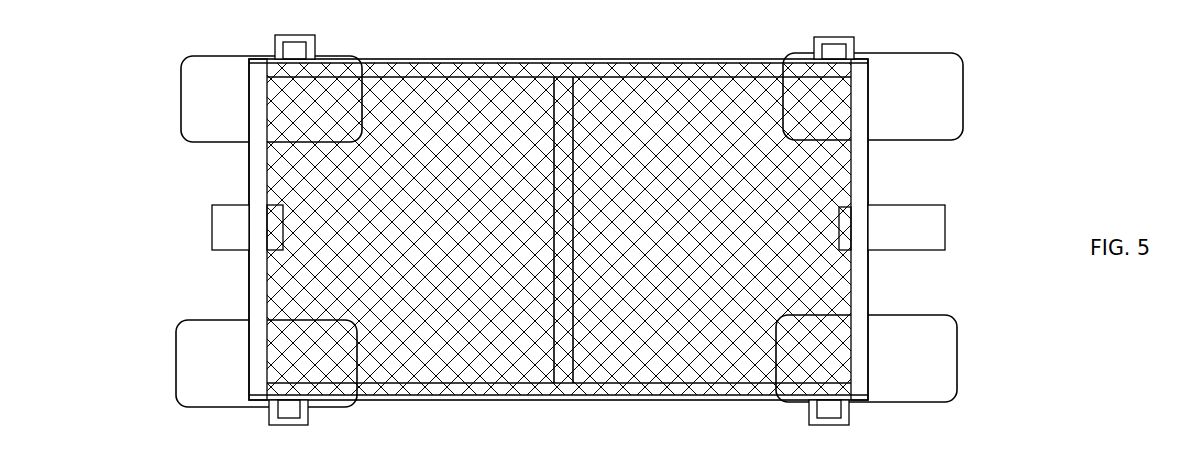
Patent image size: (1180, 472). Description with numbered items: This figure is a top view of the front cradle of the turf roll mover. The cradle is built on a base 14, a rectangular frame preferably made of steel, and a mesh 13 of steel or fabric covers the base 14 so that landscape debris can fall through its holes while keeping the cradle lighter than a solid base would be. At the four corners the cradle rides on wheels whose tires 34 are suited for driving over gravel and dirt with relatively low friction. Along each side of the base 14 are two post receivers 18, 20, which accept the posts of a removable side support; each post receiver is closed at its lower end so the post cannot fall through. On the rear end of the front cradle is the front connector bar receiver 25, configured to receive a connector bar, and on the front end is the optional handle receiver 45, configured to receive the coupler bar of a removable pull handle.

The mesh 13 is at (280, 183).
The base 14 is at (250, 293).
The post receiver 18 is at (300, 35).
The post receiver 20 is at (825, 37).
The front connector bar receiver 25 is at (930, 227).
The tires 34 is at (957, 365).
The handle receiver 45 is at (223, 227).